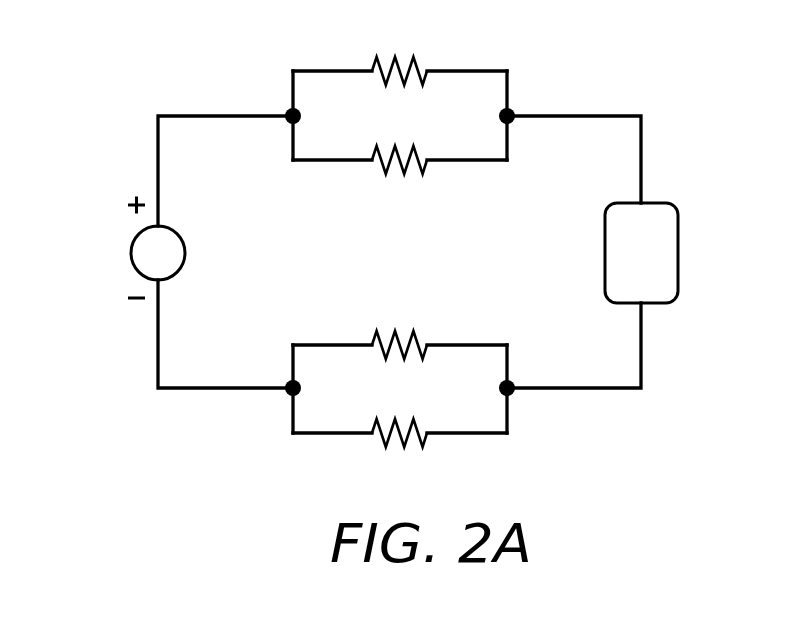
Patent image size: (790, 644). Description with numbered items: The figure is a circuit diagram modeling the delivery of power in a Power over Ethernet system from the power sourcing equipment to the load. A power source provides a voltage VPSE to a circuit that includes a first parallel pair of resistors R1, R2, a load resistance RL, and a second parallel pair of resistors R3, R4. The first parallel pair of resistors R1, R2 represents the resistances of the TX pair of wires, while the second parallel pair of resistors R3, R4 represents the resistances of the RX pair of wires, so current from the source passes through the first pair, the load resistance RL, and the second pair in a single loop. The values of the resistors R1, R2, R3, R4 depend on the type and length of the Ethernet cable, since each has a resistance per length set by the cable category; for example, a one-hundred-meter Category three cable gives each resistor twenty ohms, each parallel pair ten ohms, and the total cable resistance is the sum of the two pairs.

The power source voltage VPSE is at (113, 248).
The first resistor of first parallel pair R1 is at (399, 46).
The second resistor of first parallel pair R2 is at (399, 184).
The first resistor of second parallel pair R3 is at (399, 318).
The second resistor of second parallel pair R4 is at (399, 457).
The load resistance RL is at (641, 253).